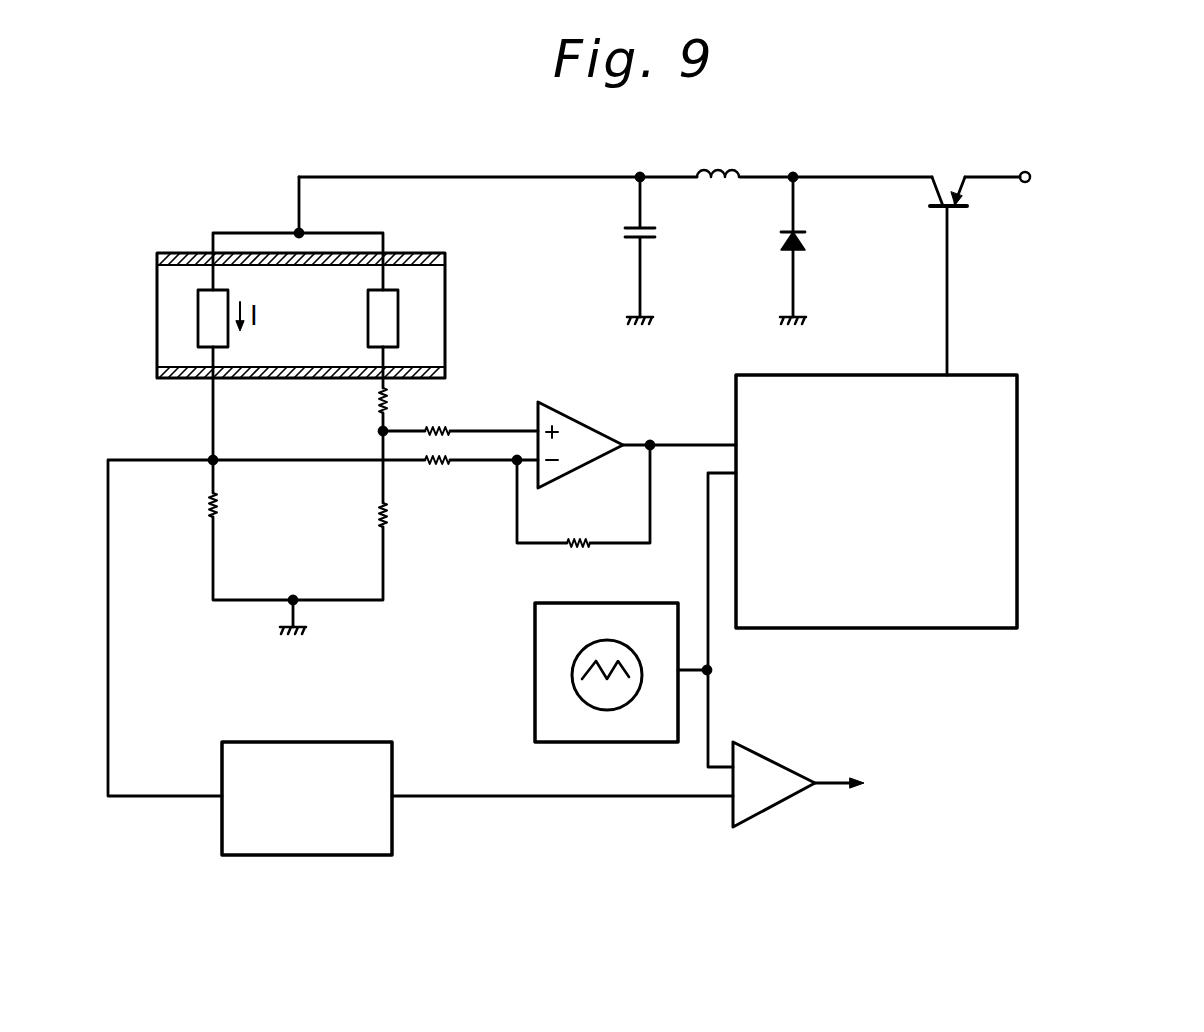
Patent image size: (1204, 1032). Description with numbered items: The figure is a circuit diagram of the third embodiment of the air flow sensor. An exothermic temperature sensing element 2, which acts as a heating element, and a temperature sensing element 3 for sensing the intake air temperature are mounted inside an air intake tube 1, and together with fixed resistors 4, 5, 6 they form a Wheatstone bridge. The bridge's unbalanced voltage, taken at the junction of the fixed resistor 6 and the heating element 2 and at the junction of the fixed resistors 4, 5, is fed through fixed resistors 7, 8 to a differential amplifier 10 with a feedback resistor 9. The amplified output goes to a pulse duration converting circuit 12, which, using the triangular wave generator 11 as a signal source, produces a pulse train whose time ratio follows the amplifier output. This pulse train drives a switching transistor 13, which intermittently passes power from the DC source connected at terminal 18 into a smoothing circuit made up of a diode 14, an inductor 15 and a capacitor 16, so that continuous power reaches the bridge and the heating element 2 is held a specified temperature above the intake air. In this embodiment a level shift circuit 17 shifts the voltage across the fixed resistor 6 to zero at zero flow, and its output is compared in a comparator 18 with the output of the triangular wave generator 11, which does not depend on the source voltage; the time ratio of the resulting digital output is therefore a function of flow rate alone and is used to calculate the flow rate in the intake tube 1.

The air intake tube 1 is at (440, 253).
The exothermic temperature sensing element 2 is at (198, 318).
The temperature sensing element 3 is at (398, 312).
The fixed resistor 4 is at (376, 400).
The fixed resistor 5 is at (376, 516).
The fixed resistor 6 is at (220, 505).
The fixed resistor 7 is at (440, 425).
The fixed resistor 8 is at (437, 468).
The fixed resistor 9 is at (578, 549).
The differential amplifier 10 is at (585, 425).
The triangular wave generator 11 is at (533, 668).
The pulse duration converting circuit 12 is at (1017, 471).
The switching transistor 13 is at (957, 210).
The diode 14 is at (806, 240).
The inductor 15 is at (718, 168).
The capacitor 16 is at (656, 236).
The level shift circuit 17 is at (305, 742).
The comparator 18 is at (782, 756).